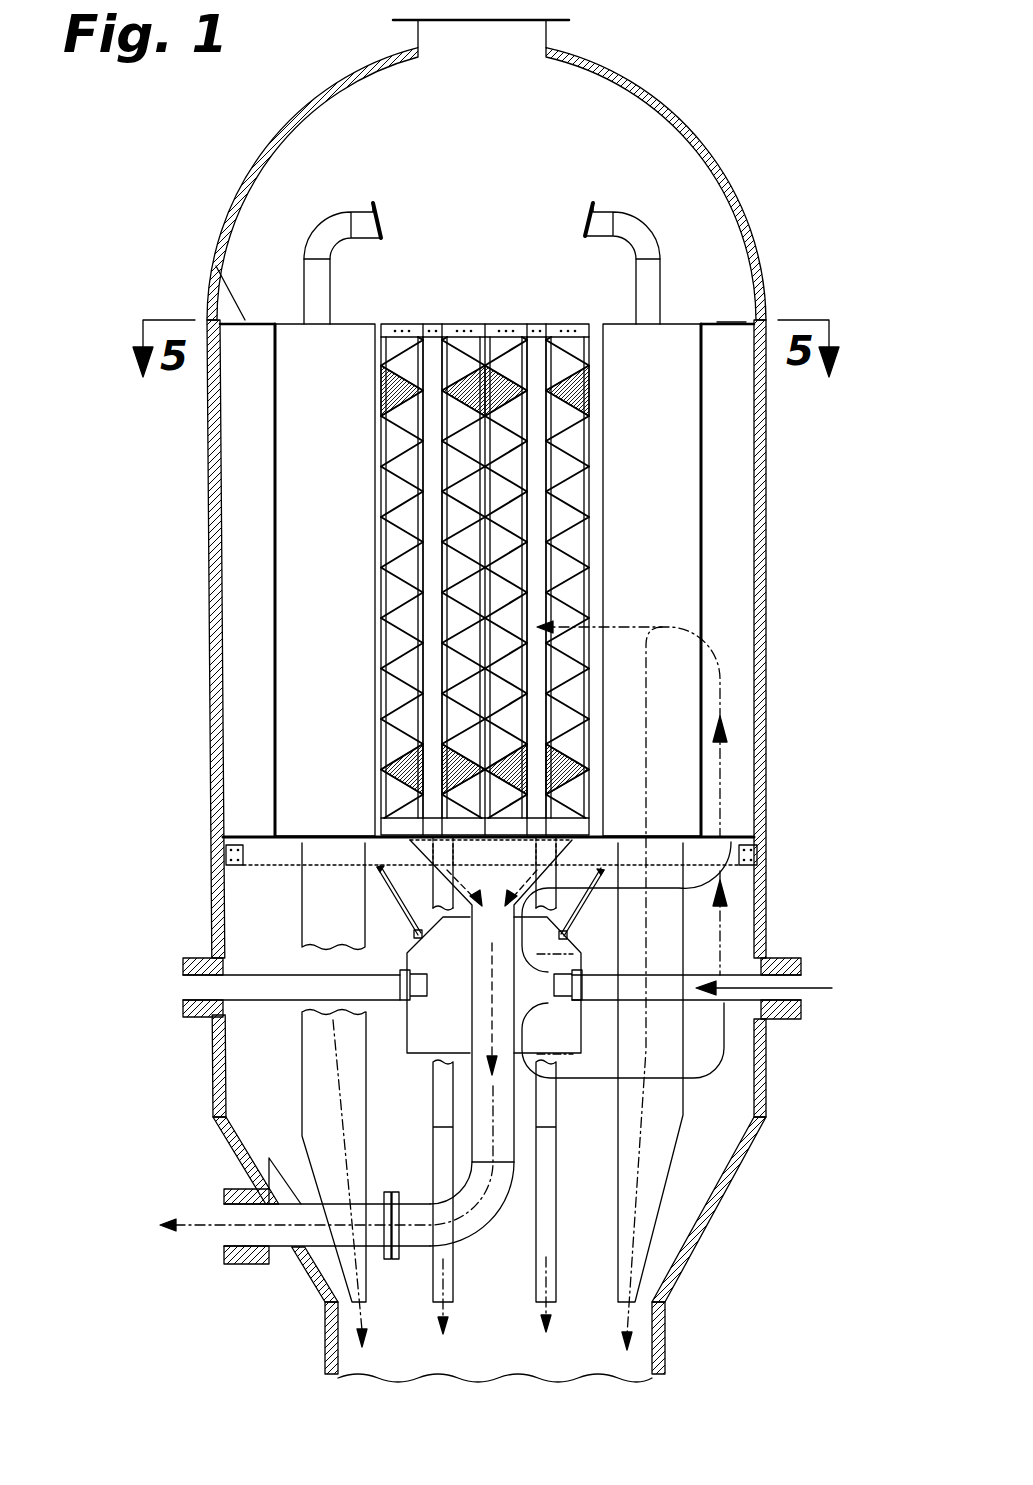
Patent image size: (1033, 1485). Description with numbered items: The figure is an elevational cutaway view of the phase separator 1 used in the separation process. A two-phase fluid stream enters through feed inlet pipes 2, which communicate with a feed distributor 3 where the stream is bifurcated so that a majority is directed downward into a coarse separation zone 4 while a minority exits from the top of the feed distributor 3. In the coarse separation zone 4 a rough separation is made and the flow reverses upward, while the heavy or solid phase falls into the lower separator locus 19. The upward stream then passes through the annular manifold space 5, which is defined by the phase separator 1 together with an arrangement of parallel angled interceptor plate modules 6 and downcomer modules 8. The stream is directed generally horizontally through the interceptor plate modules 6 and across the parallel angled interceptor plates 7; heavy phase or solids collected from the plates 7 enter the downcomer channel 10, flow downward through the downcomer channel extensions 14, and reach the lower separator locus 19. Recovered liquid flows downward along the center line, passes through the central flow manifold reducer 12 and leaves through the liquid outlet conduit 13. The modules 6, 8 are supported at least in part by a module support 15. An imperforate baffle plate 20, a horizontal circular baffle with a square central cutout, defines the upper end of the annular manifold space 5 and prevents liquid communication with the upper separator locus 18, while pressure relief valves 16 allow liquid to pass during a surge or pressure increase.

The phase separator 1 is at (769, 560).
The feed inlet pipe 2 is at (278, 973).
The feed distributor 3 is at (418, 1053).
The coarse separation zone 4 is at (415, 1173).
The annular manifold space 5 is at (256, 625).
The parallel angled interceptor plate module 6 is at (407, 322).
The parallel angled interceptor plate 7 is at (581, 422).
The downcomer module 8 is at (432, 322).
The downcomer channel 10 is at (543, 460).
The central flow manifold reducer 12 is at (512, 882).
The liquid outlet conduit 13 is at (269, 1158).
The downcomer channel extension 14 is at (433, 1276).
The module support 15 is at (246, 836).
The pressure relief valve 16 is at (320, 220).
The upper separator locus 18 is at (519, 107).
The lower separator locus 19 is at (514, 1364).
The imperforate baffle plate 20 is at (216, 266).